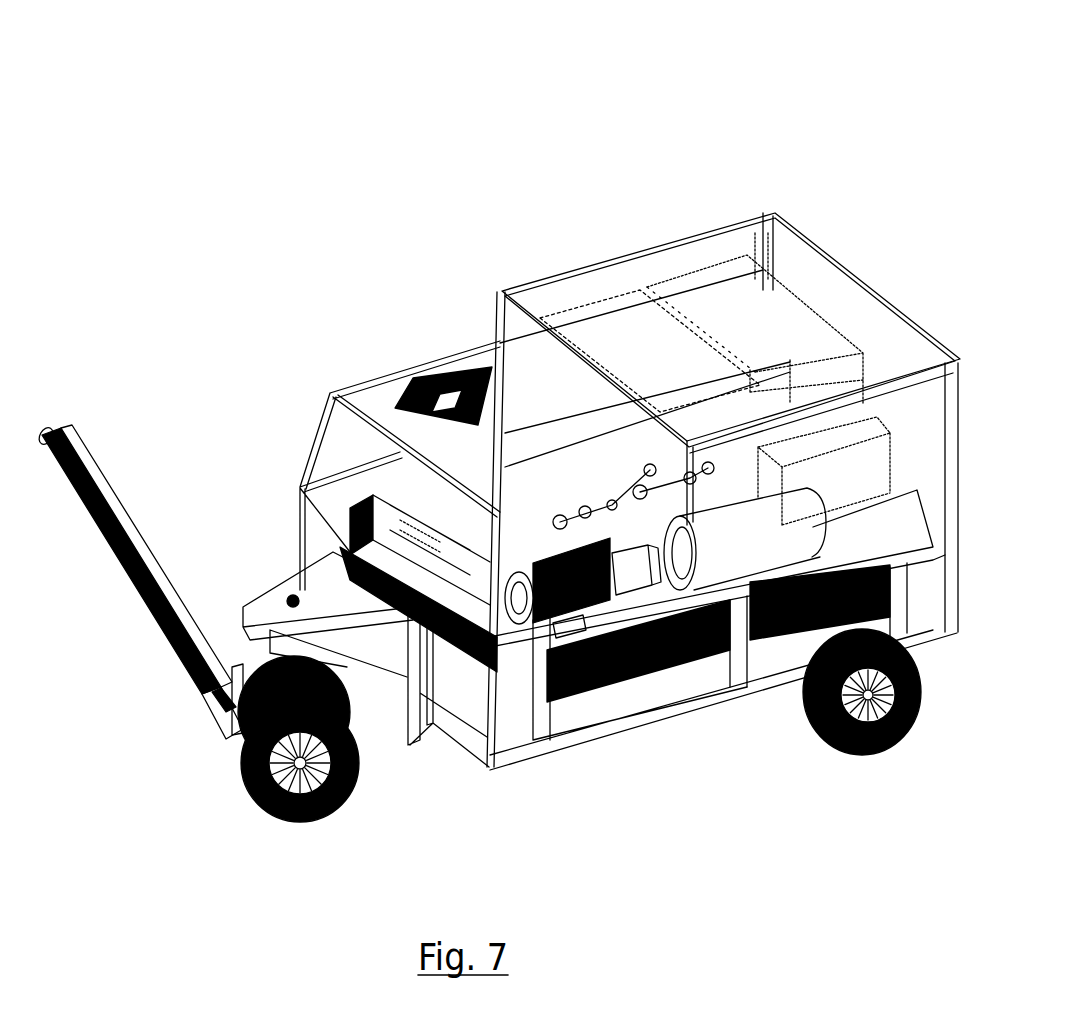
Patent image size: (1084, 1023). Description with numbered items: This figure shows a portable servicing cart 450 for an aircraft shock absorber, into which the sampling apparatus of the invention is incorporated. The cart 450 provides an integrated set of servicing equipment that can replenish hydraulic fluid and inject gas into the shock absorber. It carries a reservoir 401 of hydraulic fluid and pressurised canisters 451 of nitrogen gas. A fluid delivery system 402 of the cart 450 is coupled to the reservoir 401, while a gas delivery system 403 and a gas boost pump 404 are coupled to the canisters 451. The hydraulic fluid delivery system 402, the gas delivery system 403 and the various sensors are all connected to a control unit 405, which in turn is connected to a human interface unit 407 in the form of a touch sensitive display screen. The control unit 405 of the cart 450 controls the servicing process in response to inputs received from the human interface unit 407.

The reservoir 401 is at (611, 318).
The fluid delivery system 402 is at (633, 590).
The gas delivery system 403 is at (753, 300).
The gas boost pump 404 is at (893, 467).
The control unit 405 is at (417, 485).
The human interface unit 407 is at (422, 383).
The cart 450 is at (818, 682).
The pressurised canisters 451 is at (637, 687).